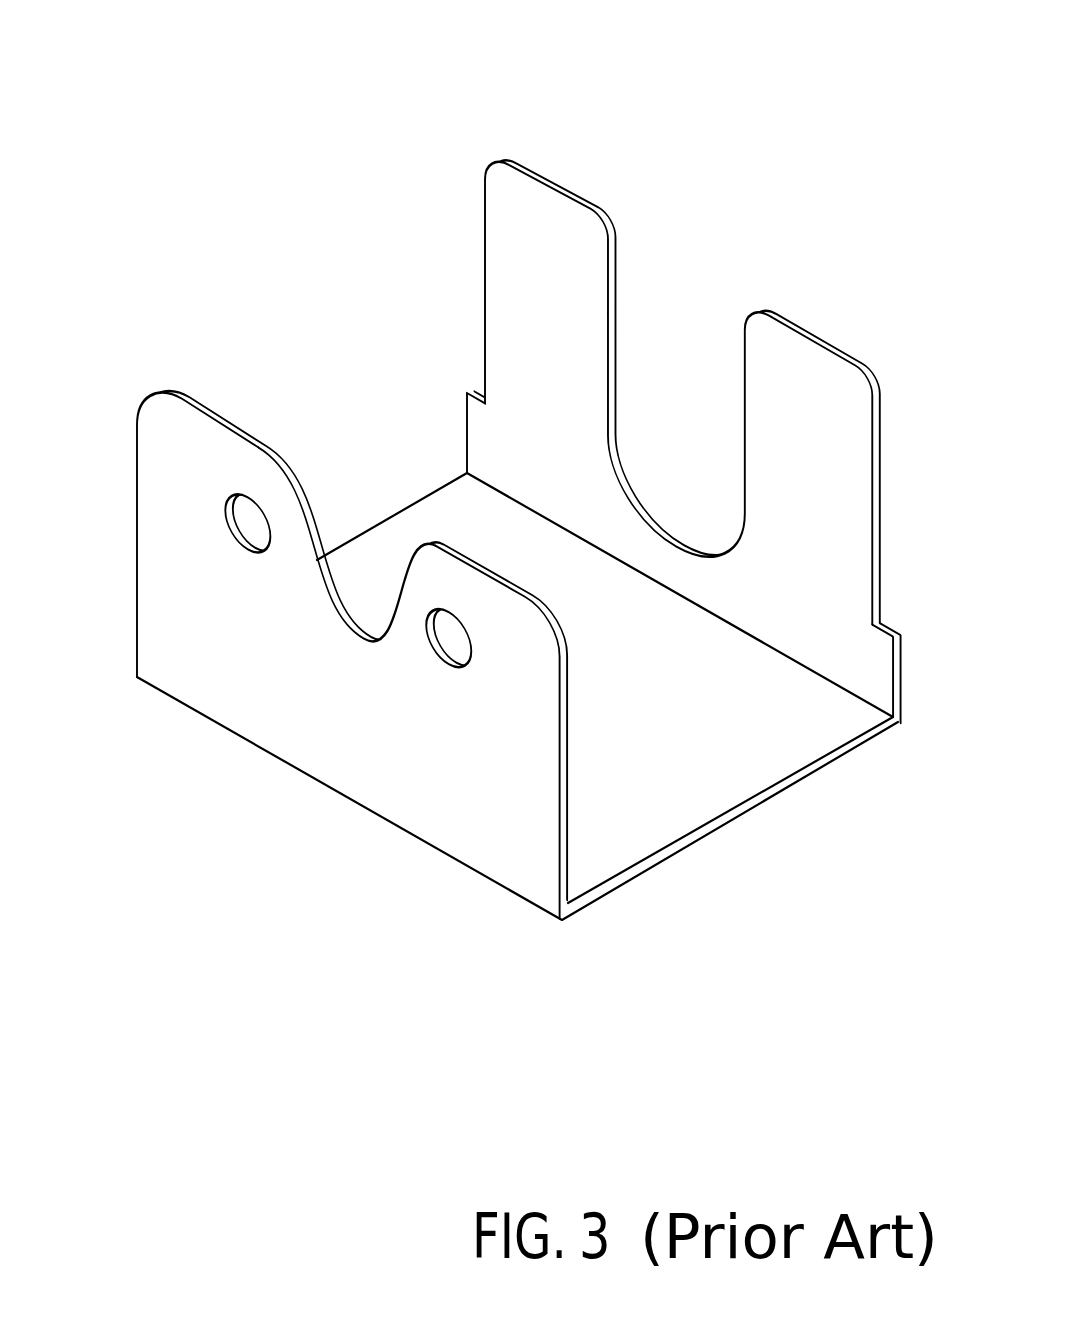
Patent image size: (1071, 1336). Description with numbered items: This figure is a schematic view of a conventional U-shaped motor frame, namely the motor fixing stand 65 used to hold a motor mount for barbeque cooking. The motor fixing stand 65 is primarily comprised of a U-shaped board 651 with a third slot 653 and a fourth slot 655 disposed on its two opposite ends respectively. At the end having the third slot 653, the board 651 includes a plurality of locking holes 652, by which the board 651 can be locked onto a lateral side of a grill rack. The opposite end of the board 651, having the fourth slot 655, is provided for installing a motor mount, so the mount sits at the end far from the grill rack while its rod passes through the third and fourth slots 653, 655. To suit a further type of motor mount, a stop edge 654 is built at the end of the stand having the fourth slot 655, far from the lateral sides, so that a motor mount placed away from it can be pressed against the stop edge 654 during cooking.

The motor fixing stand 65 is at (253, 135).
The U-shaped board 651 is at (698, 797).
The locking holes 652 is at (252, 521).
The third slot 653 is at (352, 567).
The stop edge 654 is at (895, 621).
The fourth slot 655 is at (688, 320).